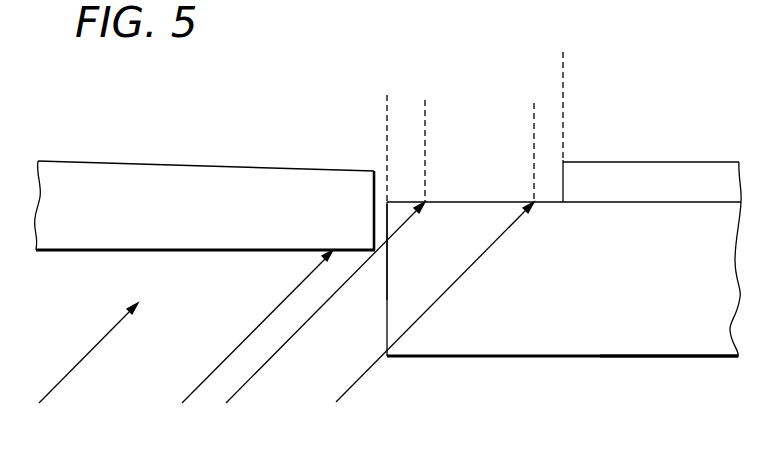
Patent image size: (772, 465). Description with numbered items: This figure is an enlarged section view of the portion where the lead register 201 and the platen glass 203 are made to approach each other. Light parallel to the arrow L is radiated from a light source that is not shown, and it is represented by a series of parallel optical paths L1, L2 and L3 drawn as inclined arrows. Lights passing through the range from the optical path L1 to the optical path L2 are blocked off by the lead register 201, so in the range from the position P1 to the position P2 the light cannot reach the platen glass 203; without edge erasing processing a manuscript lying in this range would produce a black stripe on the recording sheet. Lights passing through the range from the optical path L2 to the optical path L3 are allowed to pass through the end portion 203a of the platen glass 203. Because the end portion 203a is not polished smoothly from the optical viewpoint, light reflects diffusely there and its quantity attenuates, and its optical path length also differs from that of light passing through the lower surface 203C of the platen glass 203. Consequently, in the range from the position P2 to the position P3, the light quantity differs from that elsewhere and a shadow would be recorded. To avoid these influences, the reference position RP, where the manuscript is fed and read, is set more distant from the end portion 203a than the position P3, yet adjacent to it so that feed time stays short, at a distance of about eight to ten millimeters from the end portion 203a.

The lead register 201 is at (252, 167).
The platen glass 203 is at (572, 312).
The end portion of the platen glass 203a is at (387, 322).
The lower surface of the platen glass 203C is at (668, 358).
The position P1 is at (388, 135).
The position P2 is at (426, 135).
The position P3 is at (532, 140).
The reference position RP is at (562, 93).
The arrow L is at (85, 355).
The optical path L1 is at (233, 353).
The optical path L2 is at (258, 368).
The optical path L3 is at (366, 378).